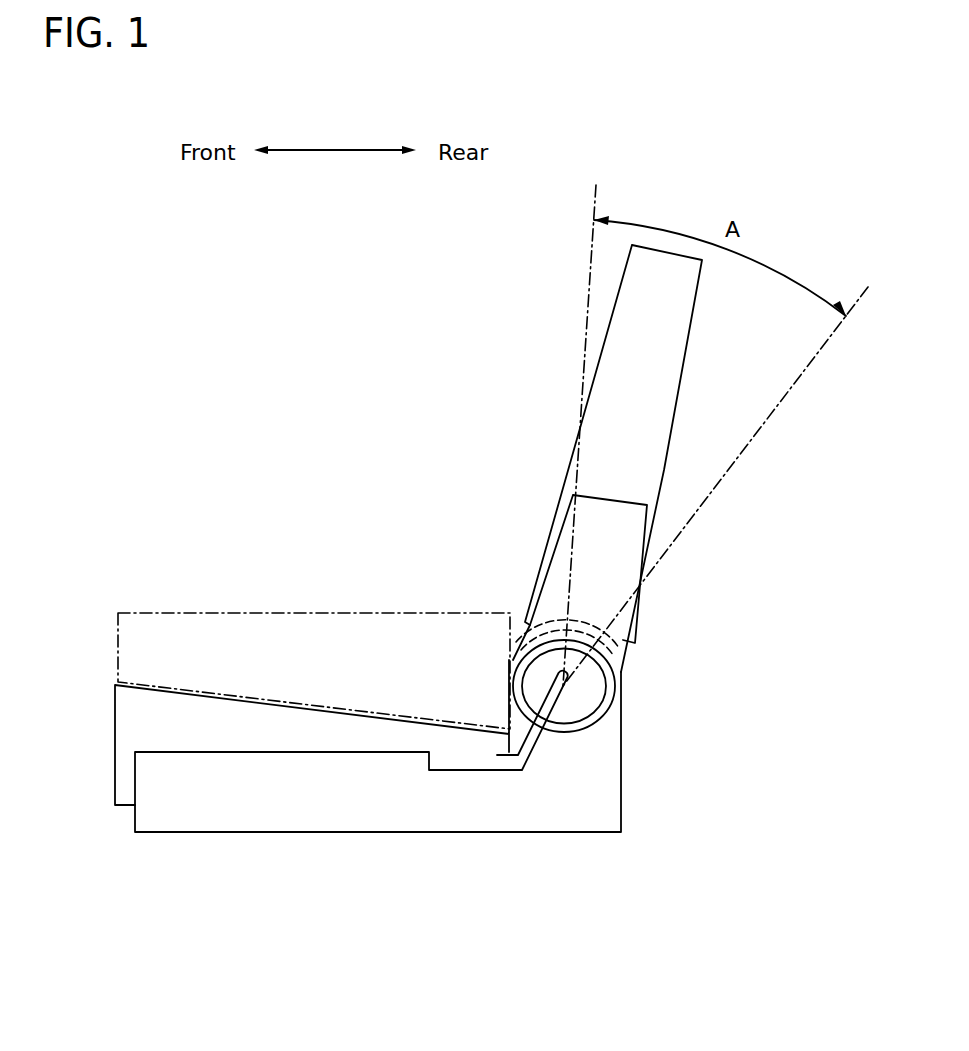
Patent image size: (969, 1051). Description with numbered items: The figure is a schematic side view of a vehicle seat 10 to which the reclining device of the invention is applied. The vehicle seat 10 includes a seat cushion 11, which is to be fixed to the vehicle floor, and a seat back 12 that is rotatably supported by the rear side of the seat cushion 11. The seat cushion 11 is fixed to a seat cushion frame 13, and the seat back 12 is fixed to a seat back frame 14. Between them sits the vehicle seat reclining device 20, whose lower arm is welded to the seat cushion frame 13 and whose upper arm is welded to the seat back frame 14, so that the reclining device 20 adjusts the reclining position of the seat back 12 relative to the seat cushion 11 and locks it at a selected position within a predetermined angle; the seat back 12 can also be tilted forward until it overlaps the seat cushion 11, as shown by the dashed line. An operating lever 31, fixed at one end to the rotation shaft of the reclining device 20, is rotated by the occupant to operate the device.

The vehicle seat 10 is at (360, 386).
The seat cushion 11 is at (113, 738).
The seat back 12 is at (680, 354).
The seat cushion frame 13 is at (358, 832).
The seat back frame 14 is at (623, 555).
The vehicle seat reclining device 20 is at (612, 705).
The operating lever 31 is at (540, 745).